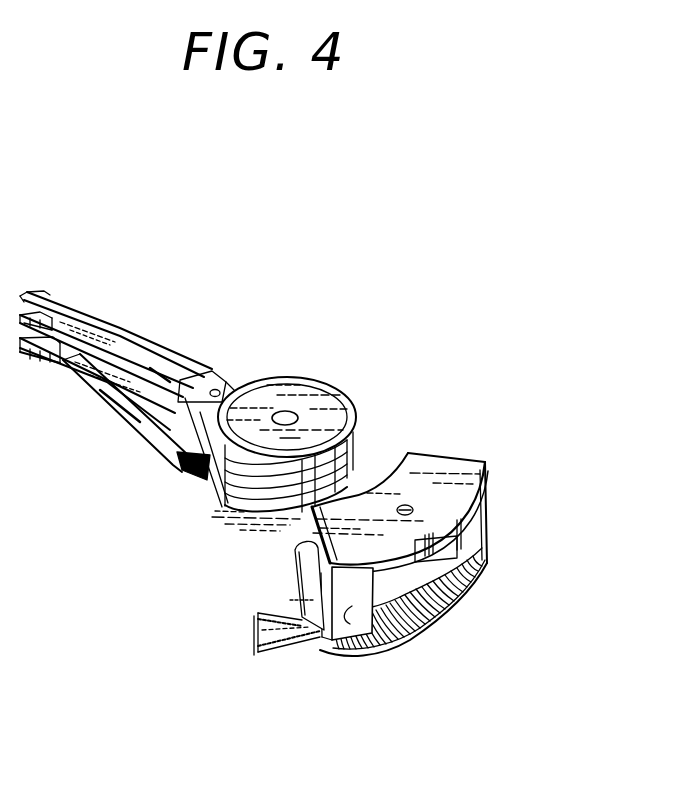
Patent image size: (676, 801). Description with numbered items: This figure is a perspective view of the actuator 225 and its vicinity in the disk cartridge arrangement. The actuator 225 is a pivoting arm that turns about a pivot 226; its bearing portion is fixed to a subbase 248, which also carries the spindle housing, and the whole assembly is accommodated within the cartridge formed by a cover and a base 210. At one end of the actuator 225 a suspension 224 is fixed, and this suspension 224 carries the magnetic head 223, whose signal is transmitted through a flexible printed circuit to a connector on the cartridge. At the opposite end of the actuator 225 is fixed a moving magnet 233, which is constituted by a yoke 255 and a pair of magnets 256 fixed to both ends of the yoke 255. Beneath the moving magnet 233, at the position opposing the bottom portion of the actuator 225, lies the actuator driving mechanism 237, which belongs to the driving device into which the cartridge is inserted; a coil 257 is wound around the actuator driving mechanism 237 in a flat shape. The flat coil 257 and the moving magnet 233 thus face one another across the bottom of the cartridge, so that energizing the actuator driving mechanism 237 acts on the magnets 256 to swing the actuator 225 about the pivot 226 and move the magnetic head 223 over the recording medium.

The base 210 is at (272, 655).
The magnetic head 223 is at (72, 300).
The suspension 224 is at (155, 360).
The actuator 225 is at (232, 388).
The pivot 226 is at (288, 416).
The moving magnet 233 is at (468, 470).
The actuator driving mechanism 237 is at (468, 603).
The subbase 248 is at (268, 598).
The yoke 255 is at (295, 551).
The pair of magnets 256 is at (488, 536).
The coil 257 is at (403, 653).